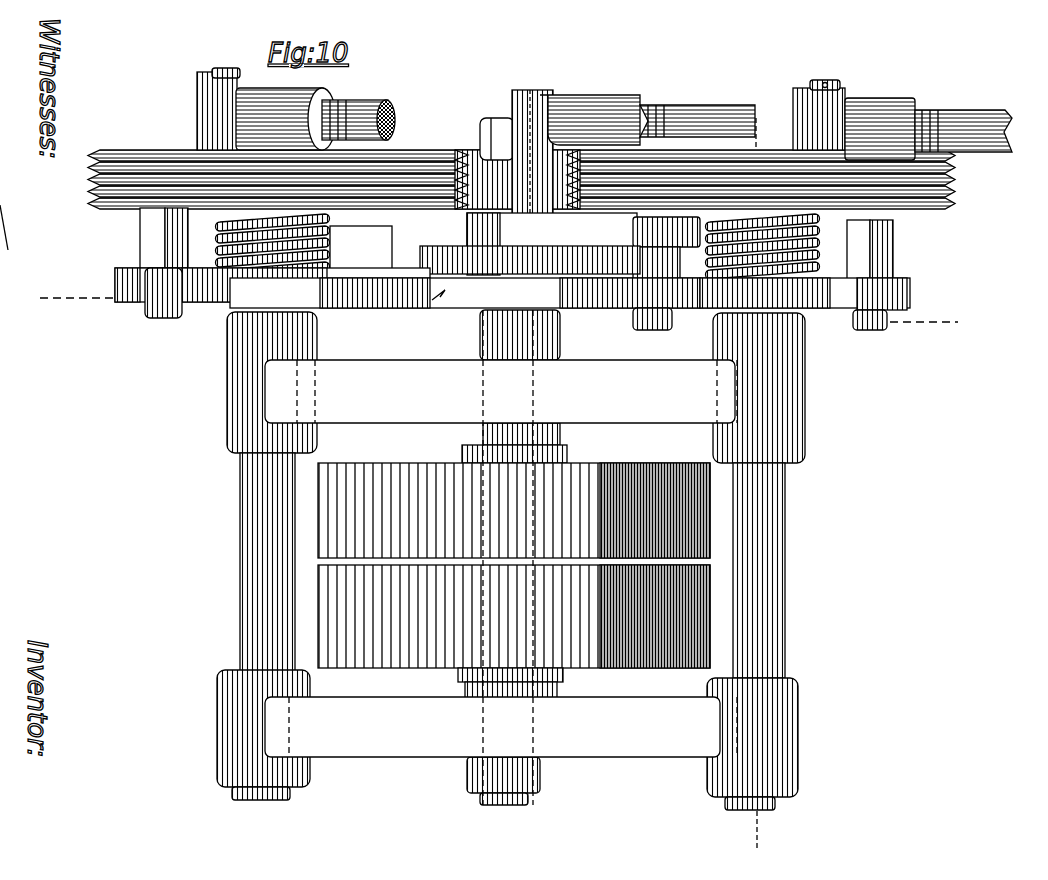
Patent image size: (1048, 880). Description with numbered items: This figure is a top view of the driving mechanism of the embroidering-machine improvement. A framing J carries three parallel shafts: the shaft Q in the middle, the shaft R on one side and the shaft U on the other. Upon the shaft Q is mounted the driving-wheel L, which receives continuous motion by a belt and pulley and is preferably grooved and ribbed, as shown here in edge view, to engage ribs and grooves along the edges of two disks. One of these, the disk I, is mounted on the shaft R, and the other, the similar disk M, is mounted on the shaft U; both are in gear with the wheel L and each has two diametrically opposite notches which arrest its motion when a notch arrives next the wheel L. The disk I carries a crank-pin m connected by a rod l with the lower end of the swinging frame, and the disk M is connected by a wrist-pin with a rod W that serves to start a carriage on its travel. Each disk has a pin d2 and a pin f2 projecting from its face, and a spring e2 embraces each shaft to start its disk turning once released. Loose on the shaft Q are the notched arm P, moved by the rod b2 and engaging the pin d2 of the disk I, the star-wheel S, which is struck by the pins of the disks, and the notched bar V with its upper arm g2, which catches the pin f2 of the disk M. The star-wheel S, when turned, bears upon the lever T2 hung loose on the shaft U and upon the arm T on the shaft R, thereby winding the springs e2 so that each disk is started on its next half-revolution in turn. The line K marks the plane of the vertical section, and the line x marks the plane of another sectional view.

The disk M is at (310, 179).
The disk I is at (746, 180).
The driving-wheel L is at (517, 163).
The rod b2 is at (633, 180).
The rod W is at (311, 109).
The crank-pin m is at (819, 104).
The rod l is at (928, 126).
The section line x is at (755, 487).
The bracket d is at (164, 238).
The spring e2 is at (529, 246).
The pin f2 is at (882, 250).
The notched arm P is at (552, 244).
The upper arm g2 is at (649, 248).
The notched bar V is at (530, 260).
The lever T2 is at (272, 293).
The star-wheel S is at (570, 294).
The arm T is at (803, 304).
The pin d2 is at (652, 329).
The section line K is at (497, 312).
The shaft U is at (267, 572).
The shaft R is at (756, 567).
The shaft Q is at (514, 573).
The framing J is at (501, 558).